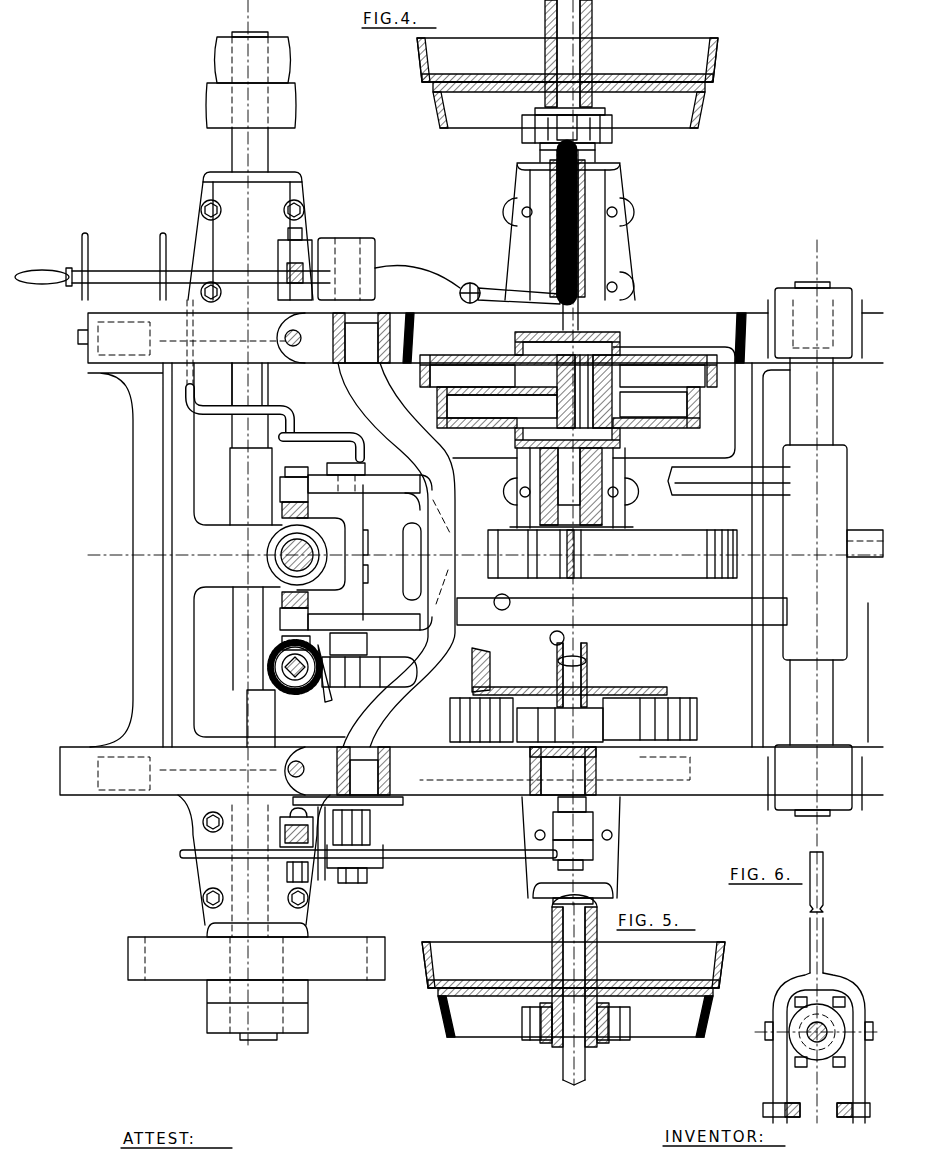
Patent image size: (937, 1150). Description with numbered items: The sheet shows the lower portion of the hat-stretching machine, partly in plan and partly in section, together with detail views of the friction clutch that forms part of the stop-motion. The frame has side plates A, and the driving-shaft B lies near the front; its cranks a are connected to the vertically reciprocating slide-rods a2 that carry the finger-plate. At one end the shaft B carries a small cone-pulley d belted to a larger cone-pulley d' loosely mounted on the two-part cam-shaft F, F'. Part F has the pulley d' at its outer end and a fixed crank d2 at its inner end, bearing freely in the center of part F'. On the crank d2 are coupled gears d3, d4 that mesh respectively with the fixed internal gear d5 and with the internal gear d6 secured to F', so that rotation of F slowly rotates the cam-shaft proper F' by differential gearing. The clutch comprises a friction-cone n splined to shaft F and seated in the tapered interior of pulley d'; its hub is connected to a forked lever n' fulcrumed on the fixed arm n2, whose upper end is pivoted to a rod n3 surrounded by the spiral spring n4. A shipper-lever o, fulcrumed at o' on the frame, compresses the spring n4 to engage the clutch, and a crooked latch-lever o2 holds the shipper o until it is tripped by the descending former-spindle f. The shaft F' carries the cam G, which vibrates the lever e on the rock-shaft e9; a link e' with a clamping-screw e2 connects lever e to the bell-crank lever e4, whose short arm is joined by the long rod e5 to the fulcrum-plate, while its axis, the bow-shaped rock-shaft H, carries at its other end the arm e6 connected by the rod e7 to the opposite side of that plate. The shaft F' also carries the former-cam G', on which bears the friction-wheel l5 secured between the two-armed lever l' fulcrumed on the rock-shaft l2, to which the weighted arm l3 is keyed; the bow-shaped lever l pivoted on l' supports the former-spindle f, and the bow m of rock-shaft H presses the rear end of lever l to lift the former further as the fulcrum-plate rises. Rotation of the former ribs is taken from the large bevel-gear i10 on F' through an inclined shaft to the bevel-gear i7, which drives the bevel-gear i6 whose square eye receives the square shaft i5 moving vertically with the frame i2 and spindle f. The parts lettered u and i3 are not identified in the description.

In FIG. 4, the small cone-pulley d is at (258, 80).
In FIG. 5, the small cone-pulley d is at (580, 1012).
In FIG. 4, the larger cone-pulley d' is at (579, 83).
In FIG. 5, the larger cone-pulley d' is at (573, 965).
In FIG. 4, the driving-shaft B is at (257, 593).
In FIG. 4, the bow-shaped rock-shaft H is at (386, 507).
In FIG. 4, the shipper-lever o is at (262, 277).
In FIG. 4, the crooked latch-lever o2 is at (221, 345).
In FIG. 4, the fulcrum of shipper-lever o' is at (467, 281).
In FIG. 4, the long rod e7 is at (286, 266).
In FIG. 4, the lever or arm e6 is at (296, 245).
In FIG. 4, the cam-shaft proper F' is at (575, 332).
In FIG. 6, the cam-shaft proper F' is at (844, 1017).
In FIG. 4, the cam-shaft part F is at (606, 306).
In FIG. 5, the cam-shaft part F is at (574, 996).
In FIG. 4, the disk hub u is at (426, 415).
In FIG. 4, the vertical forked lever n' is at (581, 134).
In FIG. 5, the vertical forked lever n' is at (587, 1032).
In FIG. 6, the vertical forked lever n' is at (816, 987).
In FIG. 4, the fixed arm n2 is at (565, 156).
In FIG. 4, the rod n3 is at (595, 300).
In FIG. 4, the expansive spiral spring n4 is at (585, 182).
In FIG. 5, the friction-cone n is at (591, 1023).
In FIG. 6, the friction-cone n is at (817, 1031).
In FIG. 4, the side plates A is at (471, 554).
In FIG. 4, the cranks a is at (254, 384).
In FIG. 4, the slide-rods a2 is at (301, 554).
In FIG. 4, the fixed crank d2 is at (622, 442).
In FIG. 4, the coupled gear d3 is at (567, 376).
In FIG. 4, the coupled gear d4 is at (656, 407).
In FIG. 4, the fixed internal gear d5 is at (577, 397).
In FIG. 4, the internal gear d6 is at (676, 430).
In FIG. 4, the former-cam G' is at (612, 554).
In FIG. 4, the friction-wheel l5 is at (539, 554).
In FIG. 4, the two-armed lever l' is at (623, 556).
In FIG. 4, the rock-shaft l2 is at (815, 549).
In FIG. 4, the arm l3 is at (865, 524).
In FIG. 4, the supplemental bow-shaped lever l is at (356, 547).
In FIG. 4, the bow of rock-shaft m is at (441, 553).
In FIG. 4, the former-spindle f is at (278, 548).
In FIG. 4, the square shaft i5 is at (272, 655).
In FIG. 4, the bevel-gear i6 is at (295, 685).
In FIG. 4, the bevel-gear i7 is at (324, 686).
In FIG. 4, the shaft i3 is at (369, 660).
In FIG. 4, the frame i2 is at (481, 695).
In FIG. 4, the larger bevel-gear i10 is at (570, 679).
In FIG. 4, the rock-shaft e9 is at (572, 675).
In FIG. 4, the cam G is at (650, 719).
In FIG. 4, the lever e is at (568, 806).
In FIG. 4, the link e' is at (358, 851).
In FIG. 4, the clamping-screw e2 is at (362, 883).
In FIG. 4, the bell-crank lever e4 is at (373, 833).
In FIG. 4, the long vertical rod e5 is at (283, 830).